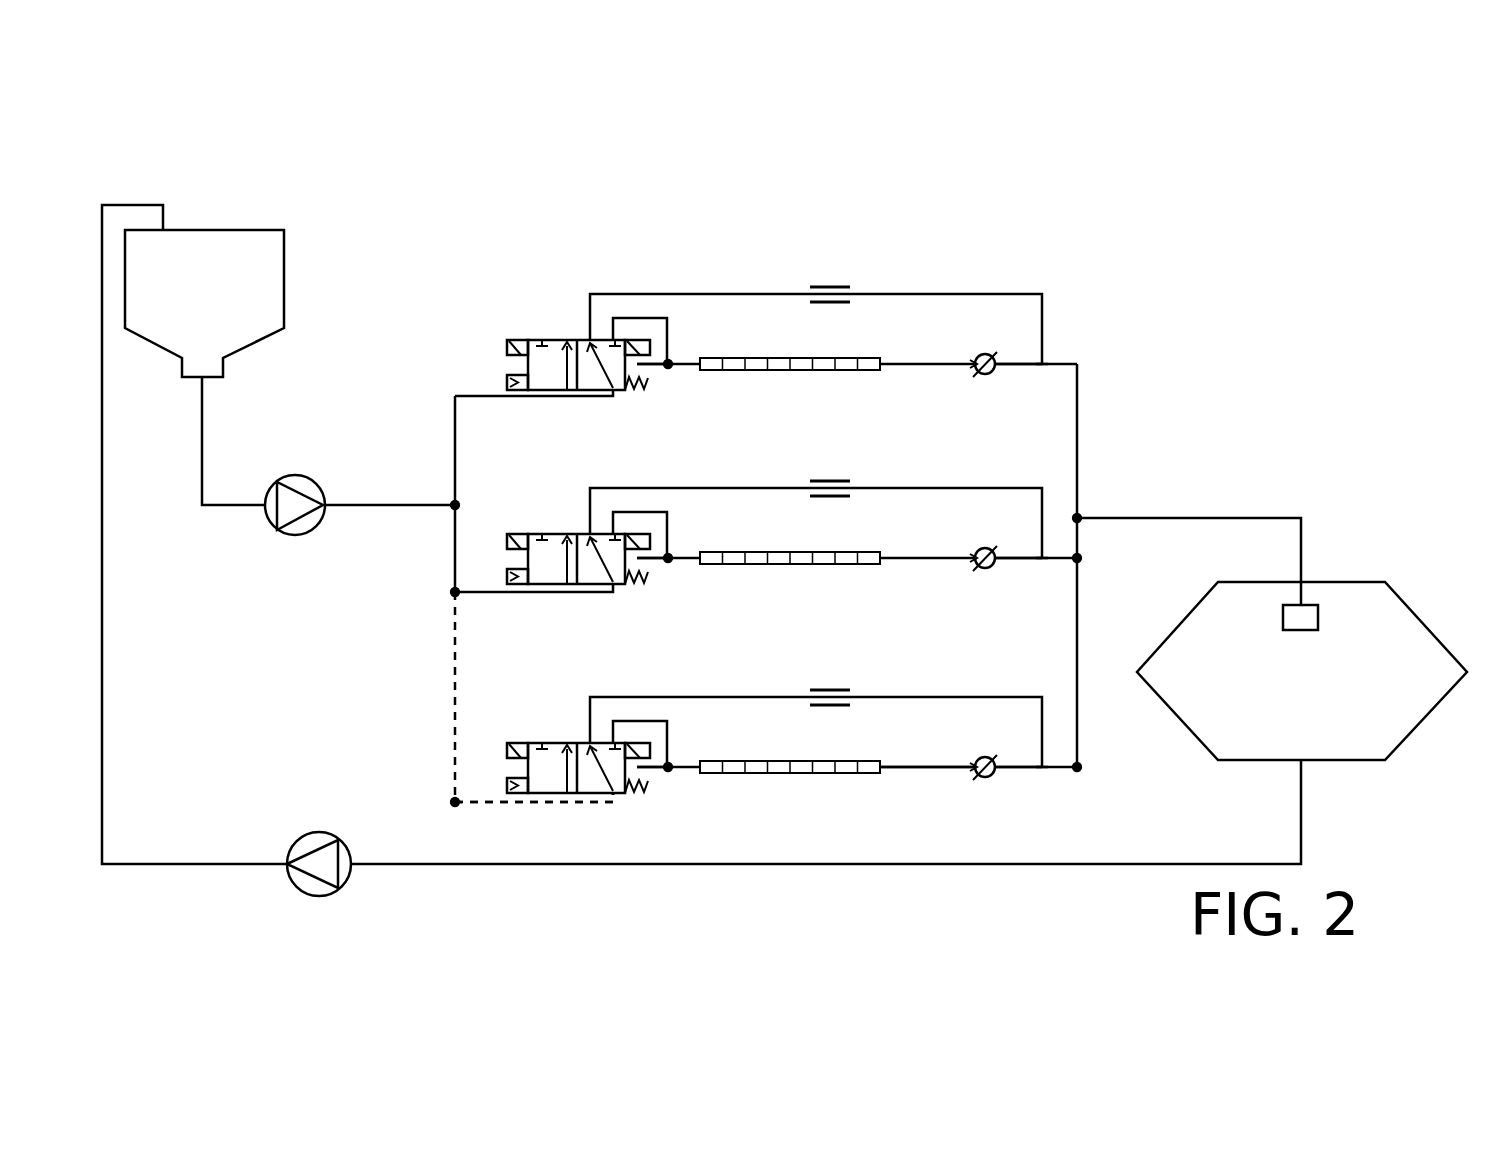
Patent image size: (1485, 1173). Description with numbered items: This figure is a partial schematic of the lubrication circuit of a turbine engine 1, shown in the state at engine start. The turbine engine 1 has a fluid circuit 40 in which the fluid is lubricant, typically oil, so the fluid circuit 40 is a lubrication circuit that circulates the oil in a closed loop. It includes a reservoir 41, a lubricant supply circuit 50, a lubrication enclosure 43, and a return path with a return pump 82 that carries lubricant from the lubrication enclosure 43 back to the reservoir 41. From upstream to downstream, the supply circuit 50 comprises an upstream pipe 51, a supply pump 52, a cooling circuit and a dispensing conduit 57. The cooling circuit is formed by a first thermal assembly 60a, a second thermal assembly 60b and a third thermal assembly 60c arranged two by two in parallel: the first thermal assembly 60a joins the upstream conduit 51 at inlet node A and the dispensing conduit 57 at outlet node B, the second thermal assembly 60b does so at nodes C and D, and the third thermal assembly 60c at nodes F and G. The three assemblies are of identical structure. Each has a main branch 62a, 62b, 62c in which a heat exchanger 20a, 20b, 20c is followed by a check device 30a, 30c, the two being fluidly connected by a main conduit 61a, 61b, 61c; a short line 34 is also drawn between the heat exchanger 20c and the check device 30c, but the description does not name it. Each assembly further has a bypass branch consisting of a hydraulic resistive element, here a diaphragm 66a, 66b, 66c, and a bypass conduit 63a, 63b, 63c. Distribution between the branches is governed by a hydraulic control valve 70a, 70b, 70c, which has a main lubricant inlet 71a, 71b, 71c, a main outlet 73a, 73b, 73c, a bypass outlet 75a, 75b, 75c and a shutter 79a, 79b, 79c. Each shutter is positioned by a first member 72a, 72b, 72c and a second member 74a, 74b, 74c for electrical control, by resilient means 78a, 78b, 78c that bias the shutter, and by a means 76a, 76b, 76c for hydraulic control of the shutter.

The turbine engine 1 is at (1340, 242).
The fluid circuit 40 is at (349, 213).
The reservoir 41 is at (250, 243).
The lubrication enclosure 43 is at (1302, 603).
The lubricant supply circuit 50 is at (232, 440).
The upstream pipe 51 is at (200, 452).
The supply pump 52 is at (308, 540).
The dispensing conduit 57 is at (1262, 517).
The return pump 82 is at (312, 833).
The heat exchanger 20a is at (745, 358).
The heat exchanger 20b is at (790, 538).
The heat exchanger 20c is at (790, 747).
The check device 30a is at (975, 370).
The check device 30c is at (952, 792).
The connection pipe 34 is at (913, 796).
The first thermal assembly 60a is at (1001, 292).
The second thermal assembly 60b is at (857, 492).
The third thermal assembly 60c is at (857, 701).
The main conduit 61a is at (1017, 367).
The main conduit 61b is at (1005, 589).
The main conduit 61c is at (1005, 798).
The main branch 62a is at (1013, 361).
The main branch 62b is at (1017, 527).
The main branch 62c is at (1018, 736).
The bypass conduit 63a is at (903, 294).
The bypass conduit 63b is at (816, 487).
The bypass conduit 63c is at (816, 696).
The first diaphragm 66a is at (832, 287).
The second diaphragm 66b is at (842, 453).
The third diaphragm 66c is at (842, 662).
The hydraulic control valve 70a is at (522, 332).
The hydraulic control valve 70b is at (544, 508).
The hydraulic control valve 70c is at (545, 717).
The main lubricant inlet 71a is at (600, 397).
The main lubricant inlet 71b is at (534, 611).
The main lubricant inlet 71c is at (534, 820).
The first member for electrically controlling the shutter 72a is at (515, 340).
The first member for electrically controlling the shutter 72b is at (490, 518).
The first member for electrically controlling the shutter 72c is at (491, 727).
The main outlet 73a is at (670, 368).
The main outlet 73b is at (664, 567).
The main outlet 73c is at (663, 776).
The second member for electrically controlling the shutter 74a is at (632, 340).
The second member for electrically controlling the shutter 74b is at (654, 496).
The second member for electrically controlling the shutter 74c is at (654, 705).
The bypass outlet 75a is at (588, 343).
The bypass outlet 75b is at (575, 519).
The bypass outlet 75c is at (575, 728).
The means for hydraulic control of the shutter 76a is at (515, 390).
The means for hydraulic control of the shutter 76b is at (495, 603).
The means for hydraulic control of the shutter 76c is at (496, 812).
The resilient means for biasing the shutter 78a is at (640, 390).
The resilient means for biasing the shutter 78b is at (618, 603).
The resilient means for biasing the shutter 78c is at (618, 812).
The shutter 79a is at (592, 350).
The shutter 79b is at (600, 501).
The shutter 79c is at (600, 710).